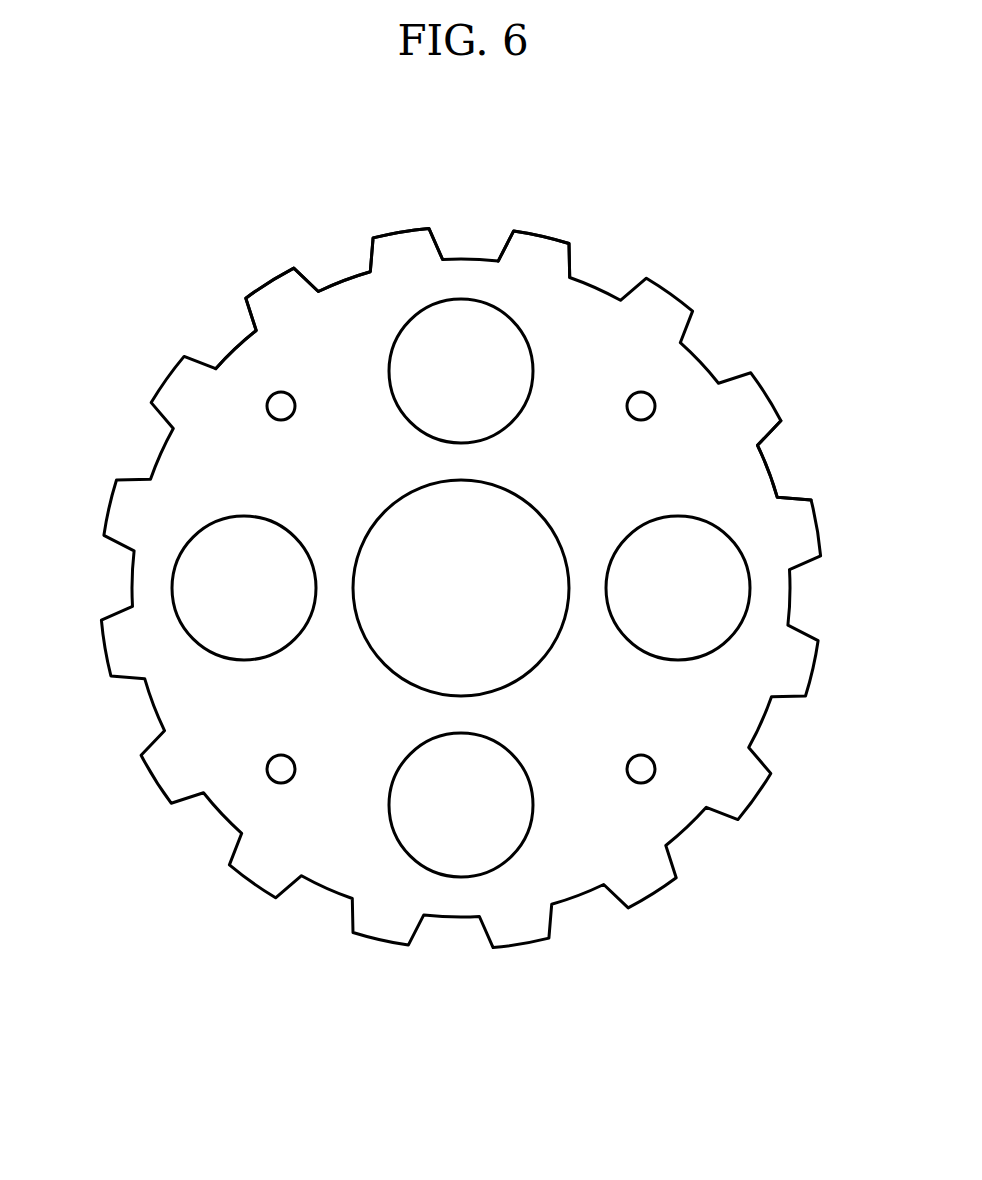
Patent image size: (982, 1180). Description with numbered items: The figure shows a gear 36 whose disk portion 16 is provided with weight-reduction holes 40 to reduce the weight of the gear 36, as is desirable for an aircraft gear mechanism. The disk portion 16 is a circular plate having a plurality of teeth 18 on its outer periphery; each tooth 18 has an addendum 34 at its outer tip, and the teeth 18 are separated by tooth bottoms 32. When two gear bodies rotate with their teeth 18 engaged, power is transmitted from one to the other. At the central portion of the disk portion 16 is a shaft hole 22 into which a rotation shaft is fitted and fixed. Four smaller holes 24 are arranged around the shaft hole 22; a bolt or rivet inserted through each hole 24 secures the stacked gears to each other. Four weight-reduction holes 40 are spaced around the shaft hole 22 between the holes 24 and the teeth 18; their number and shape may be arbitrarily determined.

The disk portion 16 is at (577, 318).
The tooth 18 is at (279, 303).
The shaft hole 22 is at (535, 665).
The hole 24 is at (277, 402).
The tooth bottom 32 is at (773, 473).
The addendum 34 is at (538, 232).
The gear 36 is at (460, 550).
The weight-reduction hole 40 is at (471, 300).